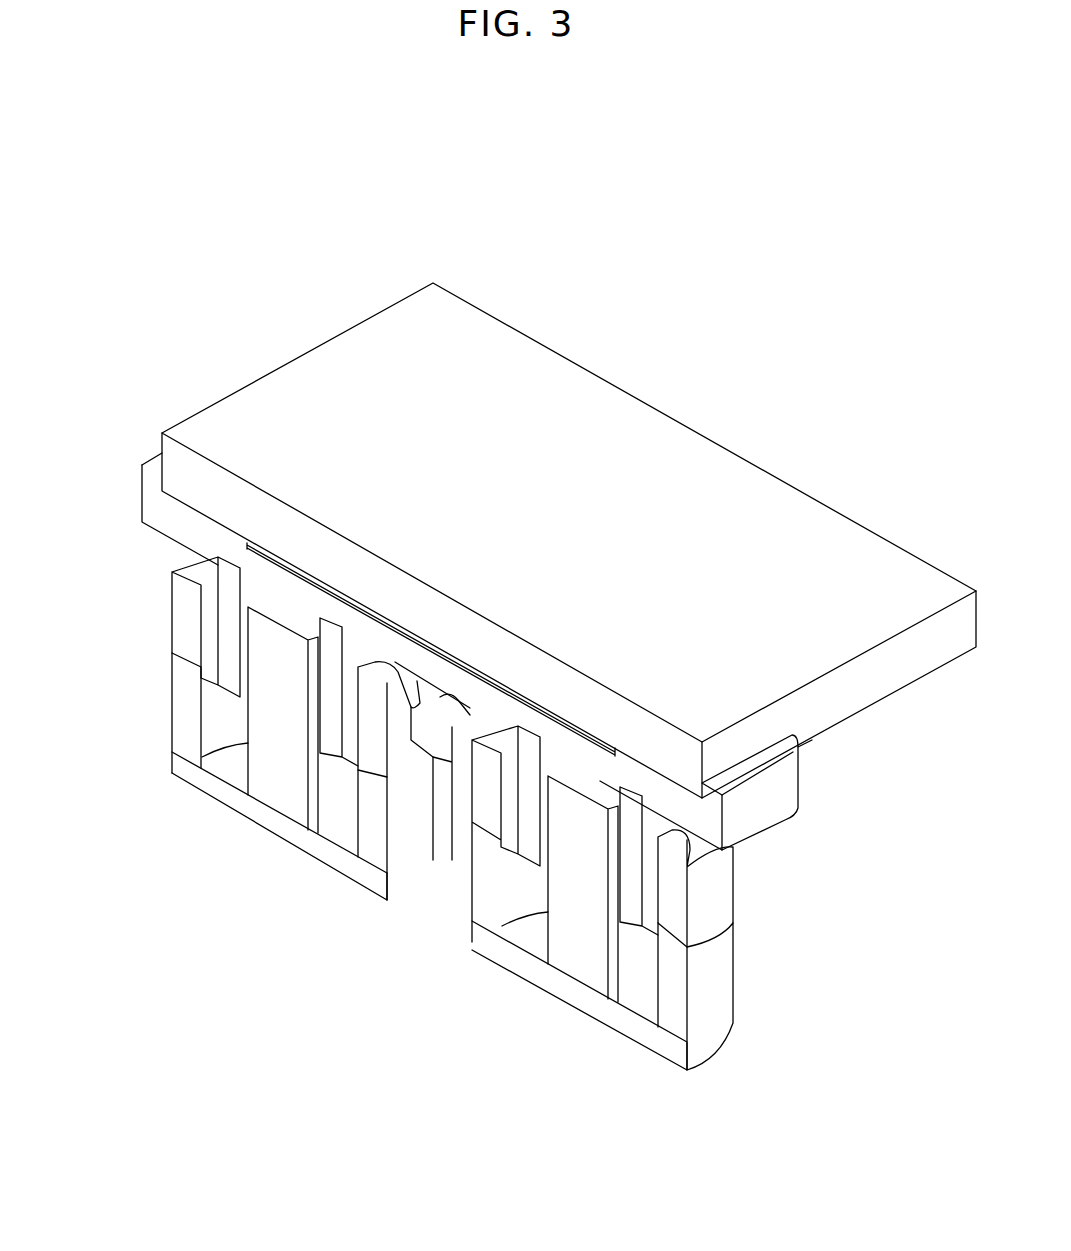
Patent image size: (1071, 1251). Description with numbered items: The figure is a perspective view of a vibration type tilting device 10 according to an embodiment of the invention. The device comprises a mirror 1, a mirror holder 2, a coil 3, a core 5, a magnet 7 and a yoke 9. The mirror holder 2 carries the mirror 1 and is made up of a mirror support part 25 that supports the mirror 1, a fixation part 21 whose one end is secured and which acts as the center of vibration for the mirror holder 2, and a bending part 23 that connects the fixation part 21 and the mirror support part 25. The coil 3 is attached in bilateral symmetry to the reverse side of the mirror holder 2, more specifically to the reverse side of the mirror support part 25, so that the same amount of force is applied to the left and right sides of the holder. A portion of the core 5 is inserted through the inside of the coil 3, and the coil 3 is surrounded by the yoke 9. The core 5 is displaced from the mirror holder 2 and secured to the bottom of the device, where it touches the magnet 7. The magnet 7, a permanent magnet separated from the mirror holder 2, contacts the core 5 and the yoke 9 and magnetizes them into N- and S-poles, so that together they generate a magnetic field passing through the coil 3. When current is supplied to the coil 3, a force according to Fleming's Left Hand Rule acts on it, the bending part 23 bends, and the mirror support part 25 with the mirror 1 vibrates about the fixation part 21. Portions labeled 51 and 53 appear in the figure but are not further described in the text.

The card connector assembly 10 is at (743, 313).
The mirror 1 is at (838, 518).
The mirror holder 2 is at (150, 496).
The mirror support part 25 is at (773, 805).
The yoke 9 is at (188, 605).
The magnet 7 is at (182, 707).
The core 5 is at (277, 780).
The coil 3 is at (335, 745).
The bottom support 51 is at (265, 733).
The bottom flange 53 is at (204, 786).
The bending part 23 is at (432, 700).
The fixation part 21 is at (455, 760).